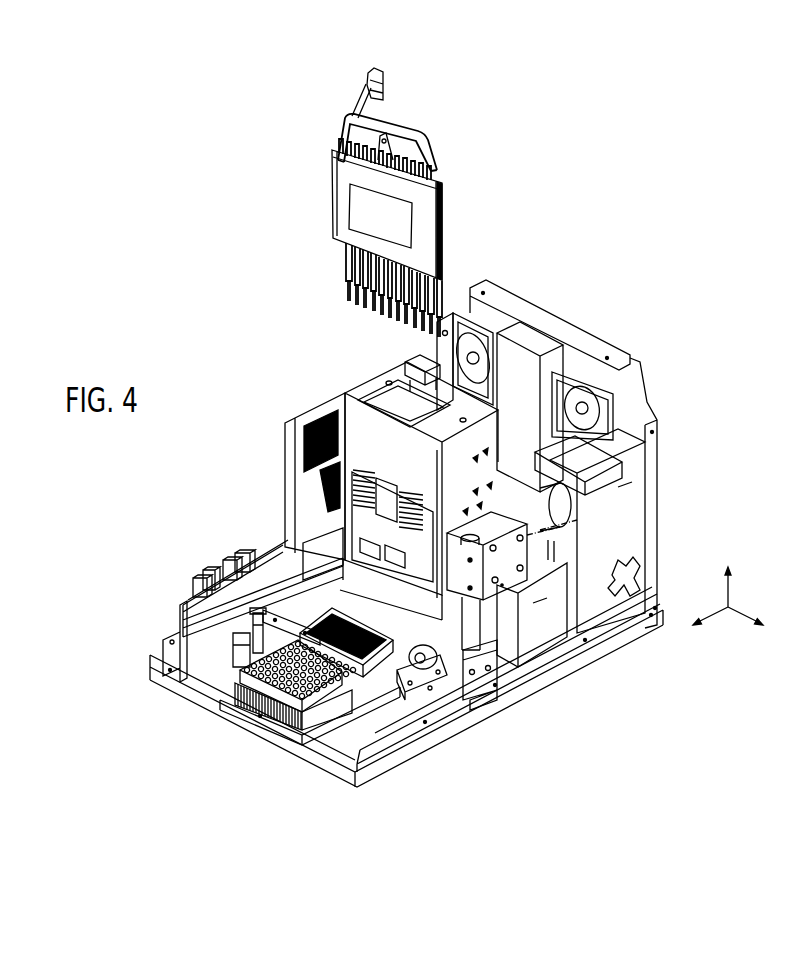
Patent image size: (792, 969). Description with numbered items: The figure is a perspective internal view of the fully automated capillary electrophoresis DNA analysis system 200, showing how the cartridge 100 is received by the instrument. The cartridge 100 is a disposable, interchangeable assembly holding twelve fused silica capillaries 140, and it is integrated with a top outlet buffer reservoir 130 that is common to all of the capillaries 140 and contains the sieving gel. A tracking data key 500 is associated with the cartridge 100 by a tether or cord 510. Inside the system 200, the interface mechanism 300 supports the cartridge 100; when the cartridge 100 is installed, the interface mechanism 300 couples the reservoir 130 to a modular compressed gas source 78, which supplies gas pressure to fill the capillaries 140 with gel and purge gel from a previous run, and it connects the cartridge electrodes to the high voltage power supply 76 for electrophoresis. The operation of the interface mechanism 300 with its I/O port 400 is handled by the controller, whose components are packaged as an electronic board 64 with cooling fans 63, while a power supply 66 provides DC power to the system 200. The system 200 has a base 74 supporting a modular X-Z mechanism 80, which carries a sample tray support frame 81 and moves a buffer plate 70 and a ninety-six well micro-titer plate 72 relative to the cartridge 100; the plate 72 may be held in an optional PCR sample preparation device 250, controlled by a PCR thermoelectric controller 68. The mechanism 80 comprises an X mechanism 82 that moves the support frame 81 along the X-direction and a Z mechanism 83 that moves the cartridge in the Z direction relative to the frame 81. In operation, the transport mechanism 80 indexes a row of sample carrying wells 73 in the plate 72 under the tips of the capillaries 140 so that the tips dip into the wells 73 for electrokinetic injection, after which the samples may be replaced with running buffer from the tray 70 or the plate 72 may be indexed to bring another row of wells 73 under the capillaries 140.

The cartridge 100 is at (441, 207).
The outlet buffer reservoir 130 is at (331, 147).
The capillaries 140 is at (350, 303).
The data key 500 is at (383, 79).
The tether or cord 510 is at (357, 100).
The CE system 200 is at (608, 272).
The interface mechanism 300 is at (344, 386).
The I/O port 400 is at (406, 365).
The cooling fans 63 is at (478, 340).
The electronic board 64 is at (293, 474).
The power supply 66 is at (598, 602).
The PCR thermoelectric controller 68 is at (532, 338).
The buffer plate 70 is at (345, 742).
The 96-well micro-titer plate 72 is at (265, 675).
The sample carrying wells 73 is at (238, 660).
The base 74 is at (464, 725).
The high voltage power supply 76 is at (537, 637).
The compressed gas source 78 is at (372, 690).
The X-Z mechanism 80 is at (345, 607).
The sample tray support frame 81 is at (285, 705).
The X mechanism 82 is at (430, 622).
The Z mechanism 83 is at (233, 632).
The PCR sample preparation device 250 is at (333, 714).